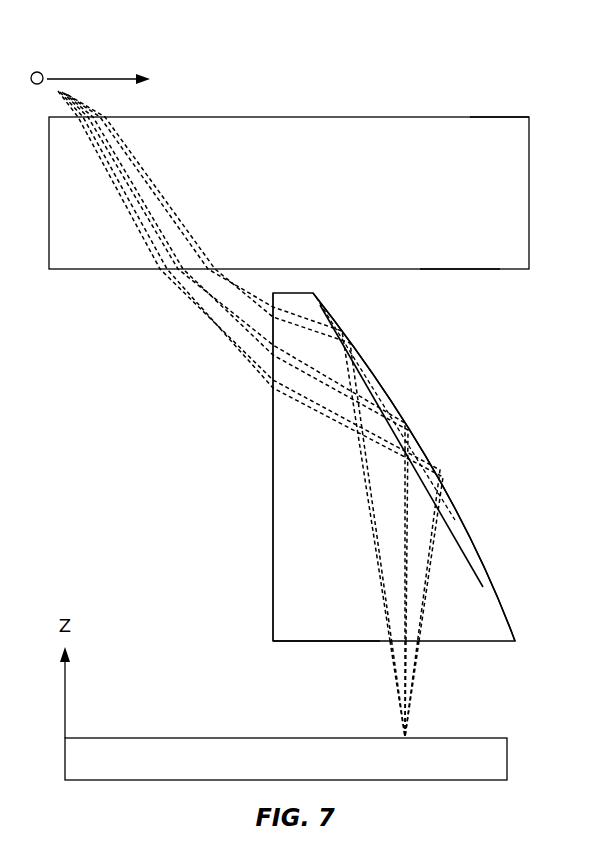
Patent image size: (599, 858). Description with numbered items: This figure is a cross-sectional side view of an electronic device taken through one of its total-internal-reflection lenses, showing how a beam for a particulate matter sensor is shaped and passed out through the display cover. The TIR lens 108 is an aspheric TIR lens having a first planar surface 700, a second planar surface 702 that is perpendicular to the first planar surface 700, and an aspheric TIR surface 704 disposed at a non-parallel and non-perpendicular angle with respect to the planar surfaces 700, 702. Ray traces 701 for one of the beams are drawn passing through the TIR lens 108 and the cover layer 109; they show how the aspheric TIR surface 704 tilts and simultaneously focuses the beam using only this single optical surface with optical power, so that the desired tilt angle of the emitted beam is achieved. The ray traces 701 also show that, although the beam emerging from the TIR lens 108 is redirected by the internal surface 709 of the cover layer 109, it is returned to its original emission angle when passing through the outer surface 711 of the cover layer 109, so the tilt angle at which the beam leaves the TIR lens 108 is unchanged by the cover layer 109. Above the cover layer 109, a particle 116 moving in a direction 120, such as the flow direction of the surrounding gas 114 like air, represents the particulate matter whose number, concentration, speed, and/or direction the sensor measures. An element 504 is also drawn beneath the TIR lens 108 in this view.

The particle 116 is at (38, 71).
The direction 120 is at (77, 78).
The gas 114 is at (218, 79).
The cover layer 109 is at (288, 200).
The outer surface of cover layer 711 is at (499, 117).
The internal surface of cover layer 709 is at (457, 270).
The TIR lens 108 is at (313, 535).
The aspheric TIR surface 704 is at (415, 436).
The second planar surface 702 is at (272, 486).
The first planar surface 700 is at (317, 642).
The ray traces 701 is at (415, 675).
The sensor / substrate 504 is at (271, 765).